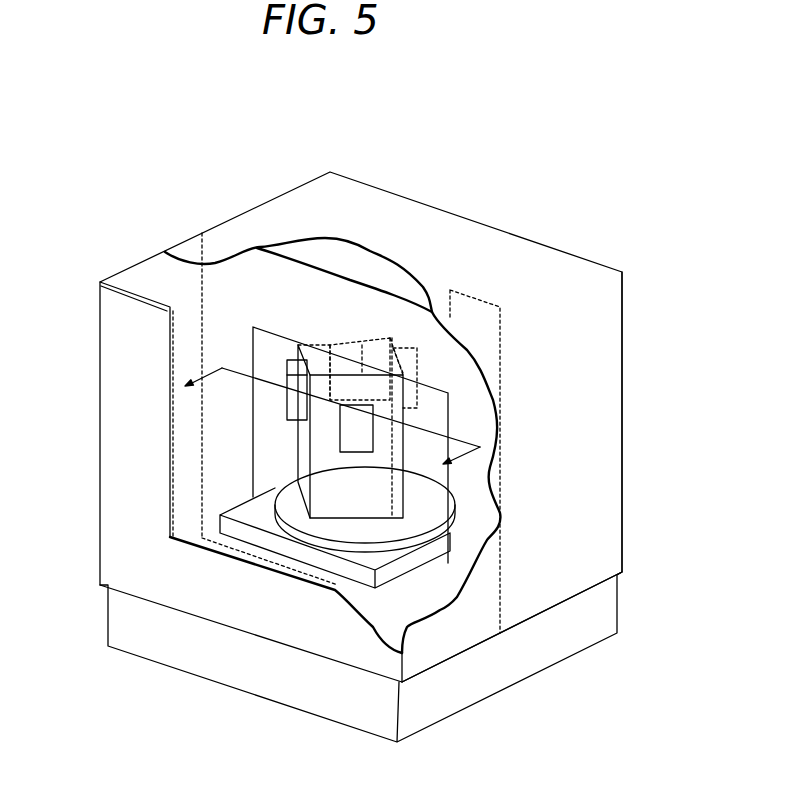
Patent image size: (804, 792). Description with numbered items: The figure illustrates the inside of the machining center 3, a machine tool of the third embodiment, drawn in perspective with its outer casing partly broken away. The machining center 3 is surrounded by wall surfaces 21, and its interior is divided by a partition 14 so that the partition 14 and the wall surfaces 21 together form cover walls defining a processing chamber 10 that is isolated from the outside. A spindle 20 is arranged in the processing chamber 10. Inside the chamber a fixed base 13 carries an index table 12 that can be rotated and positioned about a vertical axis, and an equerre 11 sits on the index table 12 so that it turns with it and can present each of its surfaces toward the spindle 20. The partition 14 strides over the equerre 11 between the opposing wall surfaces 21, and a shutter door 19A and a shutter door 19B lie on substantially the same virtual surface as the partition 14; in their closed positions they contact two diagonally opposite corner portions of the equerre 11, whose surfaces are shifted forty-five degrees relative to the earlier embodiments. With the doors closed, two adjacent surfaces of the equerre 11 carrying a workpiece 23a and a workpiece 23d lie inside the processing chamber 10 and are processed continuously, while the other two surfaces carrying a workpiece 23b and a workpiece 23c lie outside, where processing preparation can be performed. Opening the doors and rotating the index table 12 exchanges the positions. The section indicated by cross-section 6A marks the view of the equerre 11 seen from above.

The machining center 3 is at (440, 207).
The processing chamber 10 is at (355, 199).
The equerre 11 is at (301, 310).
The index table 12 is at (470, 490).
The fixed base 13 is at (465, 540).
The partition 14 is at (277, 307).
The shutter door 19A is at (262, 362).
The shutter door 19B is at (500, 378).
The spindle 20 is at (522, 297).
The wall surfaces 21 is at (120, 323).
The workpiece 23a is at (397, 363).
The workpiece 23b is at (353, 442).
The workpiece 23c is at (283, 402).
The workpiece 23d is at (342, 322).
The cross-section 6A is at (330, 417).